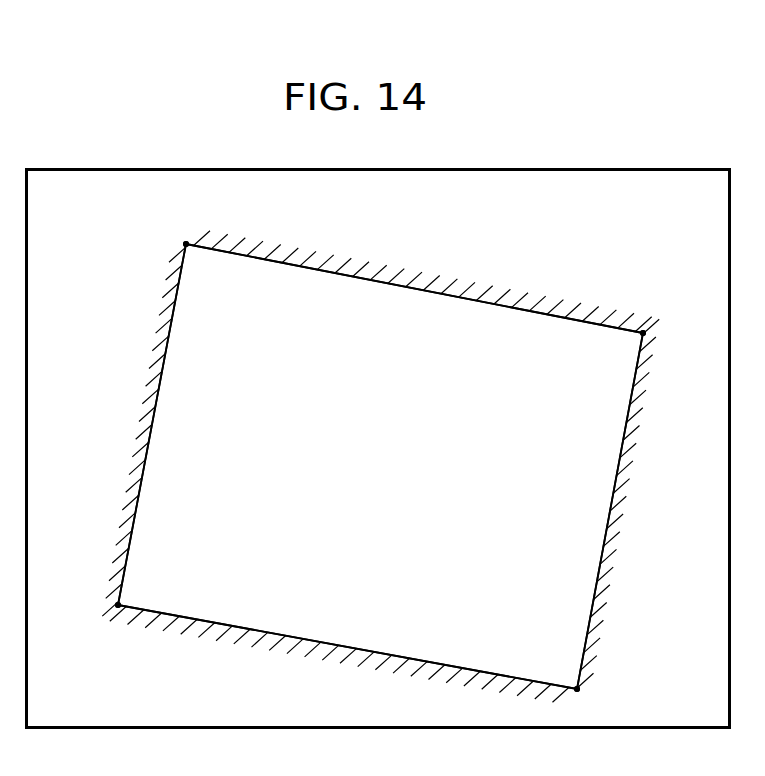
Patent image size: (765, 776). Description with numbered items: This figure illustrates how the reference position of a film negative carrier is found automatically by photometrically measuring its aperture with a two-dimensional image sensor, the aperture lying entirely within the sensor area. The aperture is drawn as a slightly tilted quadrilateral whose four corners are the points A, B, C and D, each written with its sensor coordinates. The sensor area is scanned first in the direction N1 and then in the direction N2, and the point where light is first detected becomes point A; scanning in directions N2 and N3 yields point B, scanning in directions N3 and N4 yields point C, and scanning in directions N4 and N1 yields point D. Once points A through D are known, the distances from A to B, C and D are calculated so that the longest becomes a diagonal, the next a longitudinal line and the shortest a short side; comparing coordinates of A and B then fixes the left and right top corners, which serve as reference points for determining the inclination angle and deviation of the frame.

The scanning direction N1 is at (193, 218).
The scanning direction N2 is at (680, 320).
The scanning direction N3 is at (655, 707).
The scanning direction N4 is at (99, 577).
The corner point A(ai,aj) A is at (186, 244).
The corner point B(bi,bj) B is at (643, 333).
The corner point C(ci,cj) C is at (577, 689).
The corner point D(di,dj) D is at (118, 605).